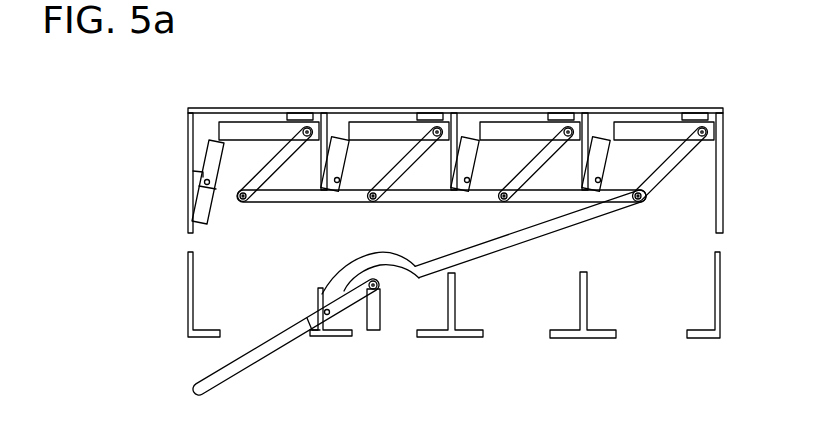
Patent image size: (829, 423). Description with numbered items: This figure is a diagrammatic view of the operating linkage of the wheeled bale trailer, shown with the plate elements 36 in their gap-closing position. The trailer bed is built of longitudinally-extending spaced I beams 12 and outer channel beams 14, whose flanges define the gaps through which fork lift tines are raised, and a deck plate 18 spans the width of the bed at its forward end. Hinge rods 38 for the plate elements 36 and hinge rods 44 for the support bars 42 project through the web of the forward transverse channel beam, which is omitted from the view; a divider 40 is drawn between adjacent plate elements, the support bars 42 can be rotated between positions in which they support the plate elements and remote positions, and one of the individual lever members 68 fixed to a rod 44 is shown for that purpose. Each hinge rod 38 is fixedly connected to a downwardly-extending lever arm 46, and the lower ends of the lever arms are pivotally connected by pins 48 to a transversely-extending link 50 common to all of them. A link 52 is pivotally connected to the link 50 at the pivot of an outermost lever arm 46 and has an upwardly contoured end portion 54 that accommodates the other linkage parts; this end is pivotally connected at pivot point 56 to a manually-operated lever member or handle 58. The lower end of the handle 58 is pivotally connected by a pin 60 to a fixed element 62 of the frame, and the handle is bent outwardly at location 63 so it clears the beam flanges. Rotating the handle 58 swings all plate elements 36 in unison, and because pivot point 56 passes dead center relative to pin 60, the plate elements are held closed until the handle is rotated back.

The I beam 12 is at (587, 300).
The outer channel beam 14 is at (724, 205).
The deck plate 18 is at (683, 110).
The plate element 36 is at (381, 127).
The hinge rod 38 is at (304, 128).
The divider 40 is at (450, 125).
The support bar 42 is at (220, 150).
The hinge rod 44 is at (205, 185).
The lever arm 46 is at (273, 170).
The pin 48 is at (244, 201).
The link 50 is at (530, 197).
The link 52 is at (580, 223).
The end portion 54 is at (352, 268).
The pivot point 56 is at (328, 315).
The lever member 58 is at (238, 365).
The pin 60 is at (375, 283).
The fixed element 62 is at (381, 330).
The bend location 63 is at (310, 322).
The lever member 68 is at (200, 206).